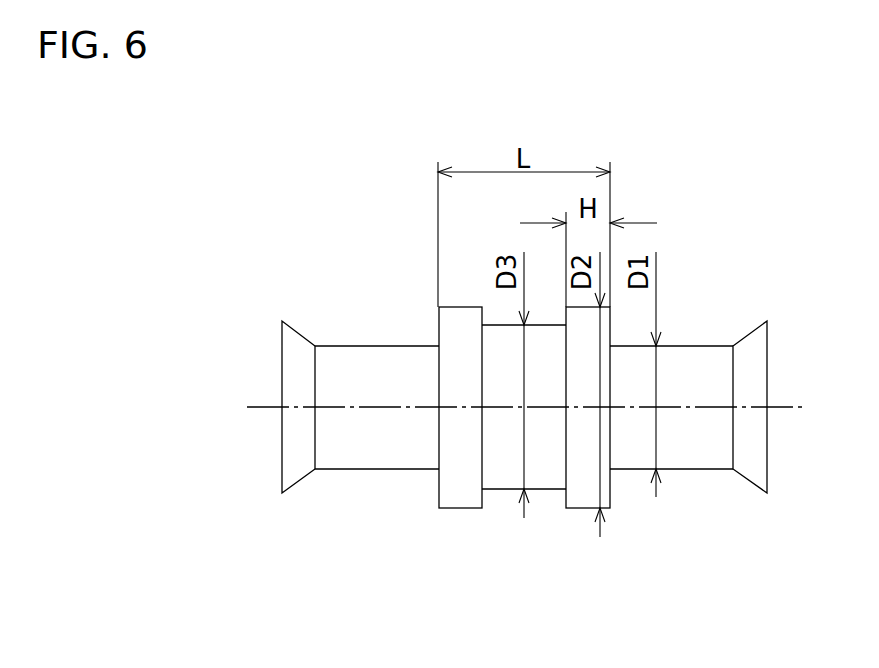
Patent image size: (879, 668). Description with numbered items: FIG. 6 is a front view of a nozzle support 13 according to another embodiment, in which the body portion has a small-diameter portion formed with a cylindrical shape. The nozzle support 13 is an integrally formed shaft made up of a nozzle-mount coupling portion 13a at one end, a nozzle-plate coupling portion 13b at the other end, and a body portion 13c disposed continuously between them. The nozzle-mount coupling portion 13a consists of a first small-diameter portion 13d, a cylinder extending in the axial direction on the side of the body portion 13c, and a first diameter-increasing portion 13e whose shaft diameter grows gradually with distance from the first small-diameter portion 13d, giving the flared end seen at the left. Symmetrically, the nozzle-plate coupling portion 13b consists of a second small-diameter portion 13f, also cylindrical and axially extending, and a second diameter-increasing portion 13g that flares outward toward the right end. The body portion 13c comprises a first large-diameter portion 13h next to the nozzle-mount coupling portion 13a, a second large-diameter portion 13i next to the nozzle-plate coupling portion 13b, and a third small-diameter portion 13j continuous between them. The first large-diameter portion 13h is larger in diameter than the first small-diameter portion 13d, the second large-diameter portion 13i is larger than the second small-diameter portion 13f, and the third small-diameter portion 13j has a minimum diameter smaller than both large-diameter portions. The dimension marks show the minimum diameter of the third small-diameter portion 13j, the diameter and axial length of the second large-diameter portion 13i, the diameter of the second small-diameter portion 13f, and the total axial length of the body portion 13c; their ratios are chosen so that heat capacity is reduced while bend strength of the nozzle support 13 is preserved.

The nozzle support 13 is at (308, 173).
The nozzle-mount coupling portion 13a is at (278, 572).
The nozzle-plate coupling portion 13b is at (668, 573).
The body portion 13c is at (442, 616).
The first small-diameter portion 13d is at (386, 470).
The first diameter-increasing portion 13e is at (303, 486).
The second small-diameter portion 13f is at (695, 470).
The second diameter-increasing portion 13g is at (748, 487).
The first large-diameter portion 13h is at (462, 509).
The second large-diameter portion 13i is at (582, 508).
The third small-diameter portion 13j is at (547, 490).